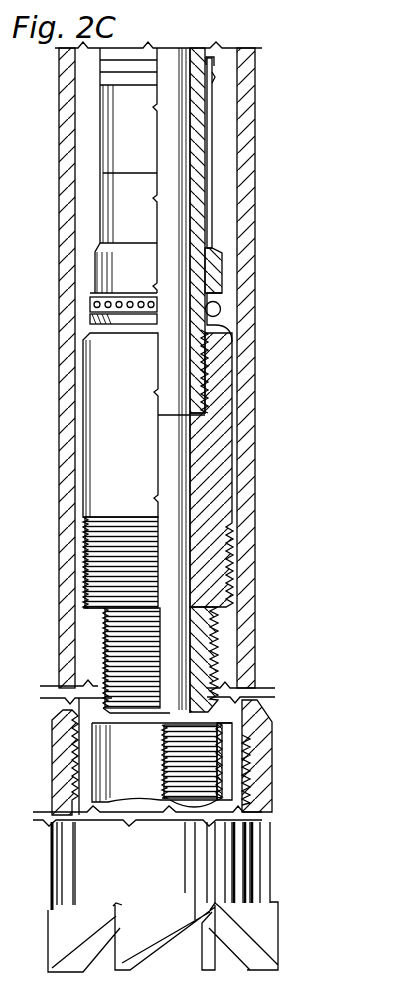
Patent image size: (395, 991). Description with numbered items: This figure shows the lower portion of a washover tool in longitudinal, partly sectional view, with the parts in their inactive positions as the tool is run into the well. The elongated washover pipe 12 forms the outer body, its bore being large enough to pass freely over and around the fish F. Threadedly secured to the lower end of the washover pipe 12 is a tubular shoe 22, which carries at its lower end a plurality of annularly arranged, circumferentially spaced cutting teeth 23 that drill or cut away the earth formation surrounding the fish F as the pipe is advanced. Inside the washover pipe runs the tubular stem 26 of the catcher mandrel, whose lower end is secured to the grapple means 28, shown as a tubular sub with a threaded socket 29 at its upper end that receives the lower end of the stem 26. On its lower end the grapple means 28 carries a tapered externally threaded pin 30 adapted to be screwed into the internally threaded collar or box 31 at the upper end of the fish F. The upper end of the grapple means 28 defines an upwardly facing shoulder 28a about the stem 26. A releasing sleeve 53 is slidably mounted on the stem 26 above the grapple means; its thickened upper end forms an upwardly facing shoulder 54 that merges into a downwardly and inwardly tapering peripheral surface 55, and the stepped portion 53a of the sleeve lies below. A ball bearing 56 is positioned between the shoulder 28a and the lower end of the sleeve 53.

The washover pipe 12 is at (250, 320).
The tubular shoe 22 is at (262, 786).
The cutting teeth 23 is at (272, 957).
The tubular stem 26 is at (195, 200).
The grapple means 28 is at (222, 456).
The upwardly facing shoulder 28a is at (226, 338).
The threaded socket 29 is at (207, 362).
The externally threaded pin 30 is at (217, 640).
The threaded box 31 is at (225, 738).
The fish F is at (225, 762).
The releasing sleeve 53 is at (210, 126).
The shoulder of sleeve 53a is at (218, 247).
The upwardly facing shoulder 54 is at (214, 60).
The tapering peripheral surface 55 is at (214, 79).
The ball bearing 56 is at (216, 308).